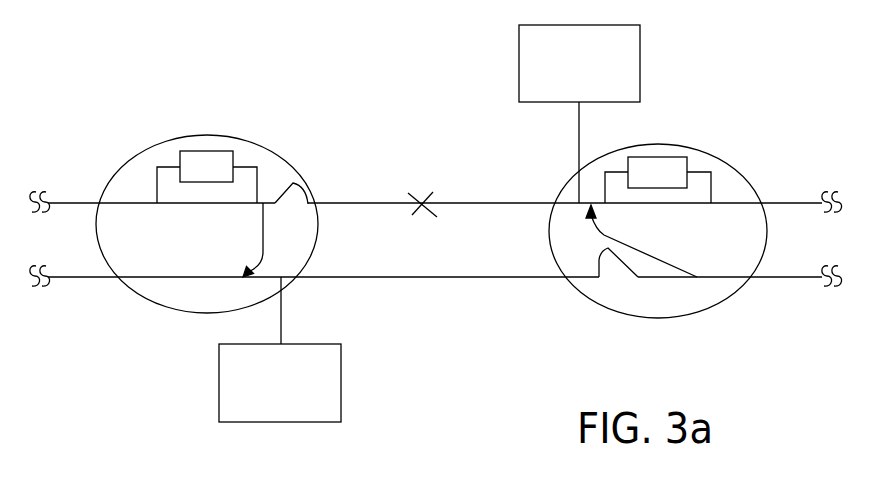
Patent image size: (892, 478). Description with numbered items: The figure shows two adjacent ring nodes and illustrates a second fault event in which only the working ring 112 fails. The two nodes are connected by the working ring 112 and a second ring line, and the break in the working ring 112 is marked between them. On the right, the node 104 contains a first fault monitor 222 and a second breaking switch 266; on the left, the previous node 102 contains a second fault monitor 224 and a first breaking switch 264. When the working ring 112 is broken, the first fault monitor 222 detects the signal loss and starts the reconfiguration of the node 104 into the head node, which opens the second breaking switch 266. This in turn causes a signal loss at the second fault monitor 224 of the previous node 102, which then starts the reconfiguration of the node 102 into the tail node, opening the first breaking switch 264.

The node 102 is at (207, 208).
The node 104 is at (658, 213).
The working ring 112 is at (457, 202).
The first fault monitor 222 is at (579, 114).
The second fault monitor 224 is at (280, 349).
The first breaking switch 264 is at (298, 195).
The second breaking switch 266 is at (612, 273).